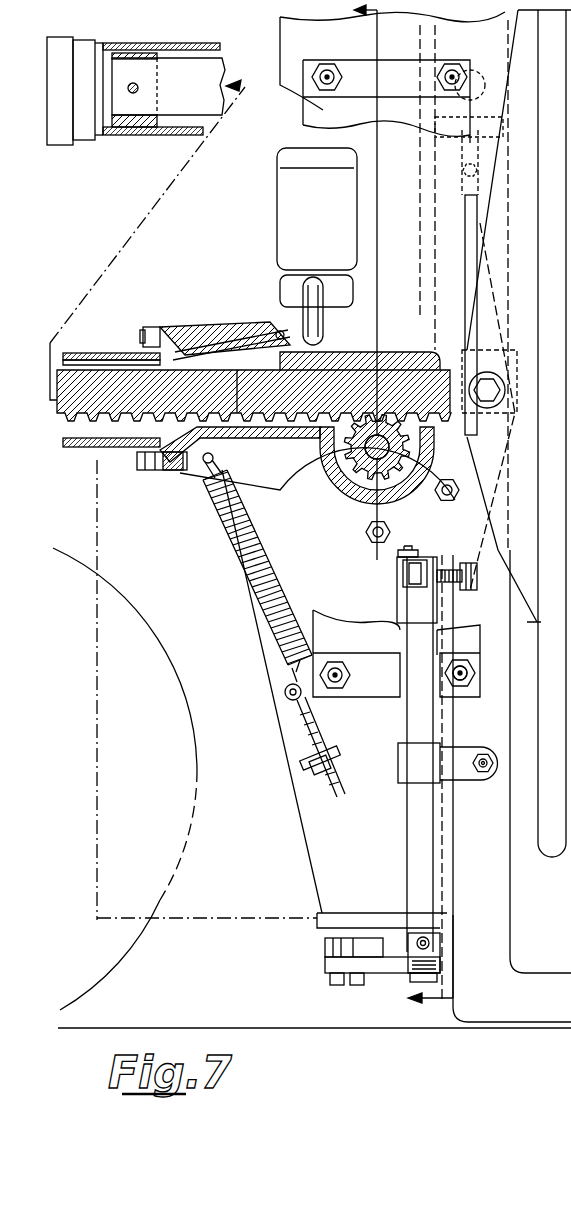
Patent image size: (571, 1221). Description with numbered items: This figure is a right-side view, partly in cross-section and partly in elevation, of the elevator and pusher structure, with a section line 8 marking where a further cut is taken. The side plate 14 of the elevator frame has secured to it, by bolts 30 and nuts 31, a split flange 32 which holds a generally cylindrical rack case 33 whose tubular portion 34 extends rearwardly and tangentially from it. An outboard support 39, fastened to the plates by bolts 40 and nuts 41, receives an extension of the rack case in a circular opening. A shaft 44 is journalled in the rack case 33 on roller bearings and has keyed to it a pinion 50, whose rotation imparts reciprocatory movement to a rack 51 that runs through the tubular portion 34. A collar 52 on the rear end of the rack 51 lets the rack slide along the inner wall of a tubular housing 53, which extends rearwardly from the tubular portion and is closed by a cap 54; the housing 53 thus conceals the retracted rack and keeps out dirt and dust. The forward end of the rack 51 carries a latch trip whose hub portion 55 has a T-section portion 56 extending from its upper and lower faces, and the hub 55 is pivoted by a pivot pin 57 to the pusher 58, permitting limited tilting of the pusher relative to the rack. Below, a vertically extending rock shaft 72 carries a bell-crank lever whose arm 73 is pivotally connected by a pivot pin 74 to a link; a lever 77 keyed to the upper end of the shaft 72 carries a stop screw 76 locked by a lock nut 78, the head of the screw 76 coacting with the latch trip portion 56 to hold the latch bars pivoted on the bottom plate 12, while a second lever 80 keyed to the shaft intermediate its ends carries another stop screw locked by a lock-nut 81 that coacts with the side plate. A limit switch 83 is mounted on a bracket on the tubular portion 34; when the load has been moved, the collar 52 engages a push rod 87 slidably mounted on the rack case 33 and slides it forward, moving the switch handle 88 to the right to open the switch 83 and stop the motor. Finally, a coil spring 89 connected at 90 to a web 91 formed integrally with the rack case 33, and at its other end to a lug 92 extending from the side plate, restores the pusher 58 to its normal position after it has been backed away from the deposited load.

The section line 8- 8 is at (395, 505).
The bottom plate 12 is at (323, 925).
The plate 14 is at (303, 848).
The bolts 30 is at (372, 545).
The nuts 31 is at (390, 552).
The split flange 32 is at (340, 527).
The rack case 33 is at (323, 460).
The tubular portion 34 is at (267, 444).
The outboard support 39 is at (325, 100).
The bolts 40 is at (467, 683).
The nuts 41 is at (460, 684).
The shaft 44 is at (332, 508).
The pinion 50 is at (412, 495).
The rack 51 is at (193, 68).
The collar 52 is at (136, 130).
The tubular housing 53 is at (165, 43).
The cap 54 is at (68, 138).
The hub portion 55 is at (462, 352).
The T-shaped portion 56 is at (468, 223).
The pivot pin 57 is at (510, 352).
The pusher 58 is at (443, 965).
The rock shaft 72 is at (415, 830).
The arm 73 is at (395, 965).
The pivot pin 74 is at (347, 987).
The screw 76 is at (467, 590).
The lever 77 is at (420, 593).
The lock nut 78 is at (410, 589).
The lever 80 is at (460, 773).
The lock-nut 81 is at (497, 758).
The limit switch 83 is at (290, 192).
The push rod 87 is at (283, 323).
The switch handle 88 is at (323, 320).
The coil spring 89 is at (245, 618).
The connection 90 is at (200, 463).
The web 91 is at (203, 478).
The lug 92 is at (300, 770).